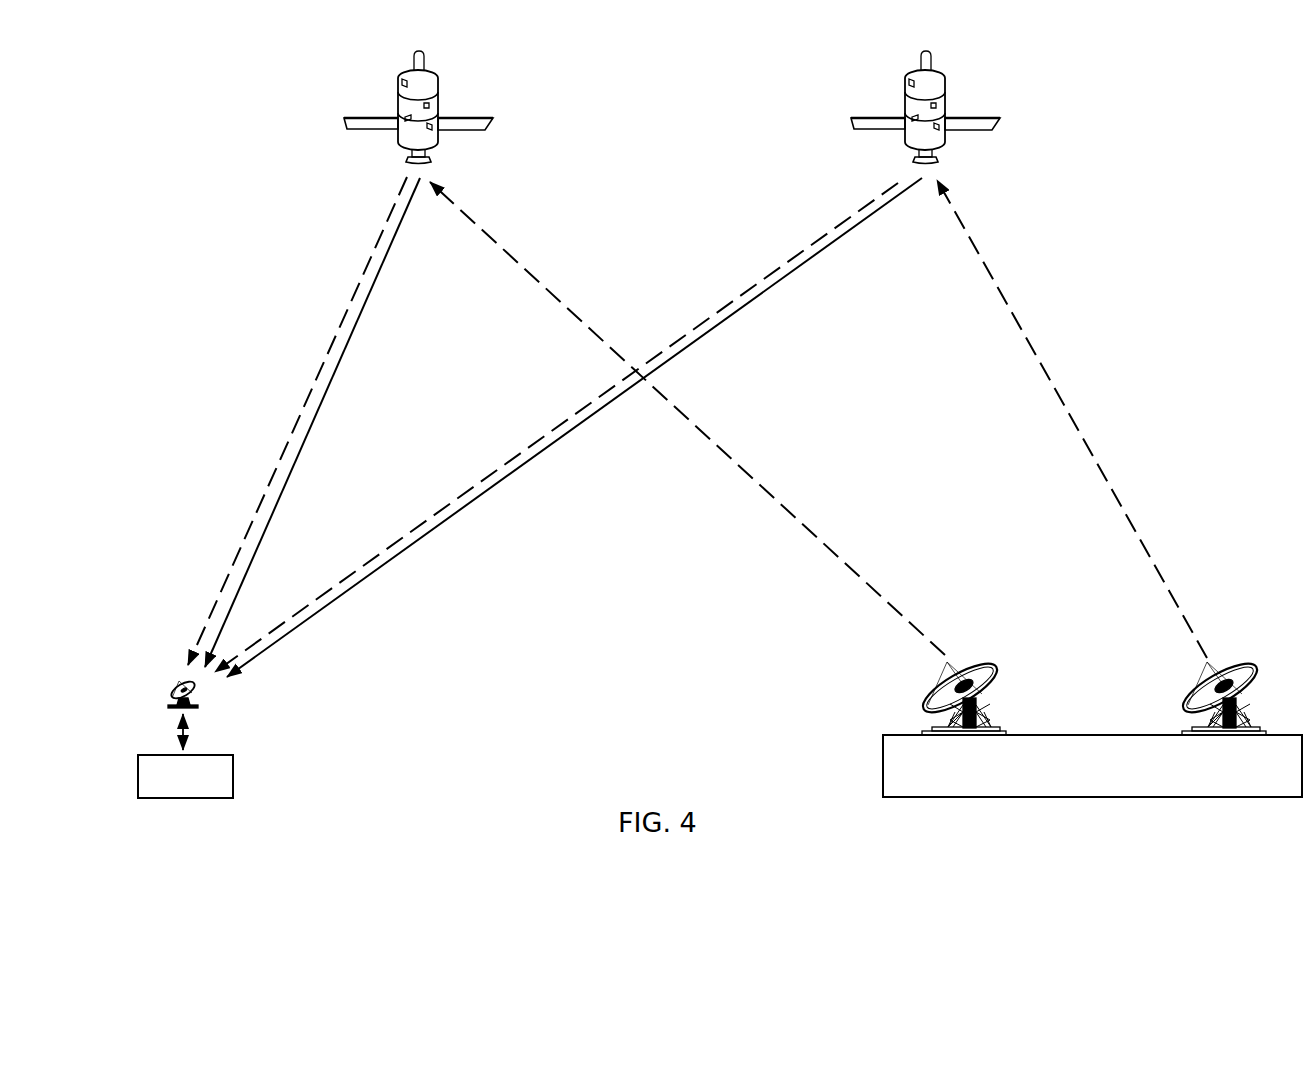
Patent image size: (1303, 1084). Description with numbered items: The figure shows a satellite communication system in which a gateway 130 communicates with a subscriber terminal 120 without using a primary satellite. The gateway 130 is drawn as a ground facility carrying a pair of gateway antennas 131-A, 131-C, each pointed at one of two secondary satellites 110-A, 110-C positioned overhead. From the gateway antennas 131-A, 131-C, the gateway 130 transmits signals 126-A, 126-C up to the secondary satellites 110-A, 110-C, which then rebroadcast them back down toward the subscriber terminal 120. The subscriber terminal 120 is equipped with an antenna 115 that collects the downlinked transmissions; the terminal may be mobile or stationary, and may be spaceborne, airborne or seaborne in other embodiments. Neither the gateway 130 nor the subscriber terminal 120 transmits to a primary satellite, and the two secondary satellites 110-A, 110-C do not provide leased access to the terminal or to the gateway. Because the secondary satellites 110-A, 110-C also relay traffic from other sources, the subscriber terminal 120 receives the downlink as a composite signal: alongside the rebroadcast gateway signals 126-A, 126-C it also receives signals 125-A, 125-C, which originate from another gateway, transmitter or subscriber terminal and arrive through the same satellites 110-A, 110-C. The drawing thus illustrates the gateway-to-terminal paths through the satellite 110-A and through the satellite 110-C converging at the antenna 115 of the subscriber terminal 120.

The secondary satellite 110-A is at (408, 106).
The secondary satellite 110-C is at (916, 106).
The antenna 115 is at (196, 696).
The subscriber terminal 120 is at (160, 755).
The signal 125-A is at (327, 393).
The signal 125-C is at (487, 488).
The signal 126-A is at (296, 427).
The signal 126-C is at (497, 462).
The gateway 130 is at (1092, 766).
The gateway antenna 131-A is at (937, 696).
The gateway antenna 131-C is at (1197, 697).